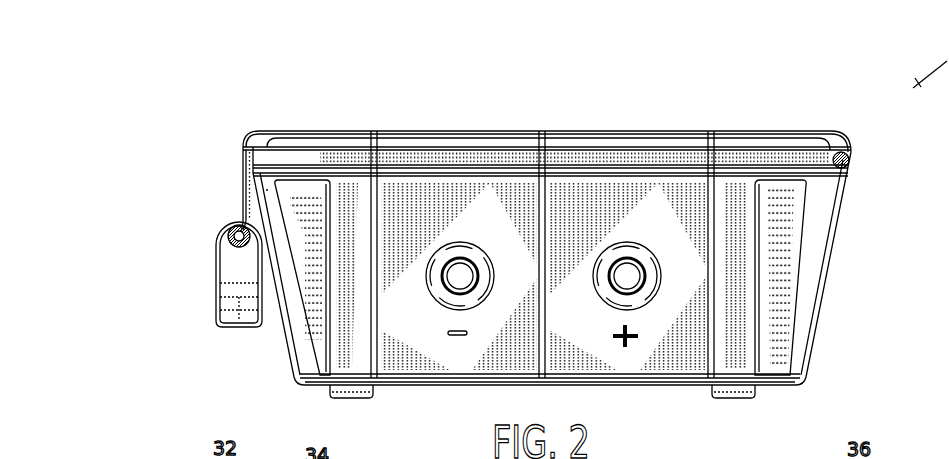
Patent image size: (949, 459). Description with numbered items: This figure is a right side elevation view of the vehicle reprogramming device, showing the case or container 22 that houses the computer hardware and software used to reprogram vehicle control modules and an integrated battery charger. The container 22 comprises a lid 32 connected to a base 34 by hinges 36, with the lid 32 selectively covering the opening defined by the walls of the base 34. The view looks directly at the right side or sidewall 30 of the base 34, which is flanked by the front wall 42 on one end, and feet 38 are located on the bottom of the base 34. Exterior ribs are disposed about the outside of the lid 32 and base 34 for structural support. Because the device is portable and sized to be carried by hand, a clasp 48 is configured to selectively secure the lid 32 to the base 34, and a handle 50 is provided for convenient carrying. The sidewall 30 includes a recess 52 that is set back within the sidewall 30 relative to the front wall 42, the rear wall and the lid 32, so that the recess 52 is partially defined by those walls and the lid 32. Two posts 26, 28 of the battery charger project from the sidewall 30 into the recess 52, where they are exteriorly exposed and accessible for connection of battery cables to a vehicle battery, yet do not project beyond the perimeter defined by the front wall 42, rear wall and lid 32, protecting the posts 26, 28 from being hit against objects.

The container 22 is at (242, 129).
The post 26 is at (456, 284).
The post 28 is at (645, 290).
The right sidewall 30 is at (743, 240).
The lid 32 is at (418, 130).
The base 34 is at (848, 197).
The hinges 36 is at (856, 157).
The feet 38 is at (342, 400).
The front wall 42 is at (298, 320).
The clasp 48 is at (240, 185).
The handle 50 is at (215, 283).
The recess 52 is at (630, 205).